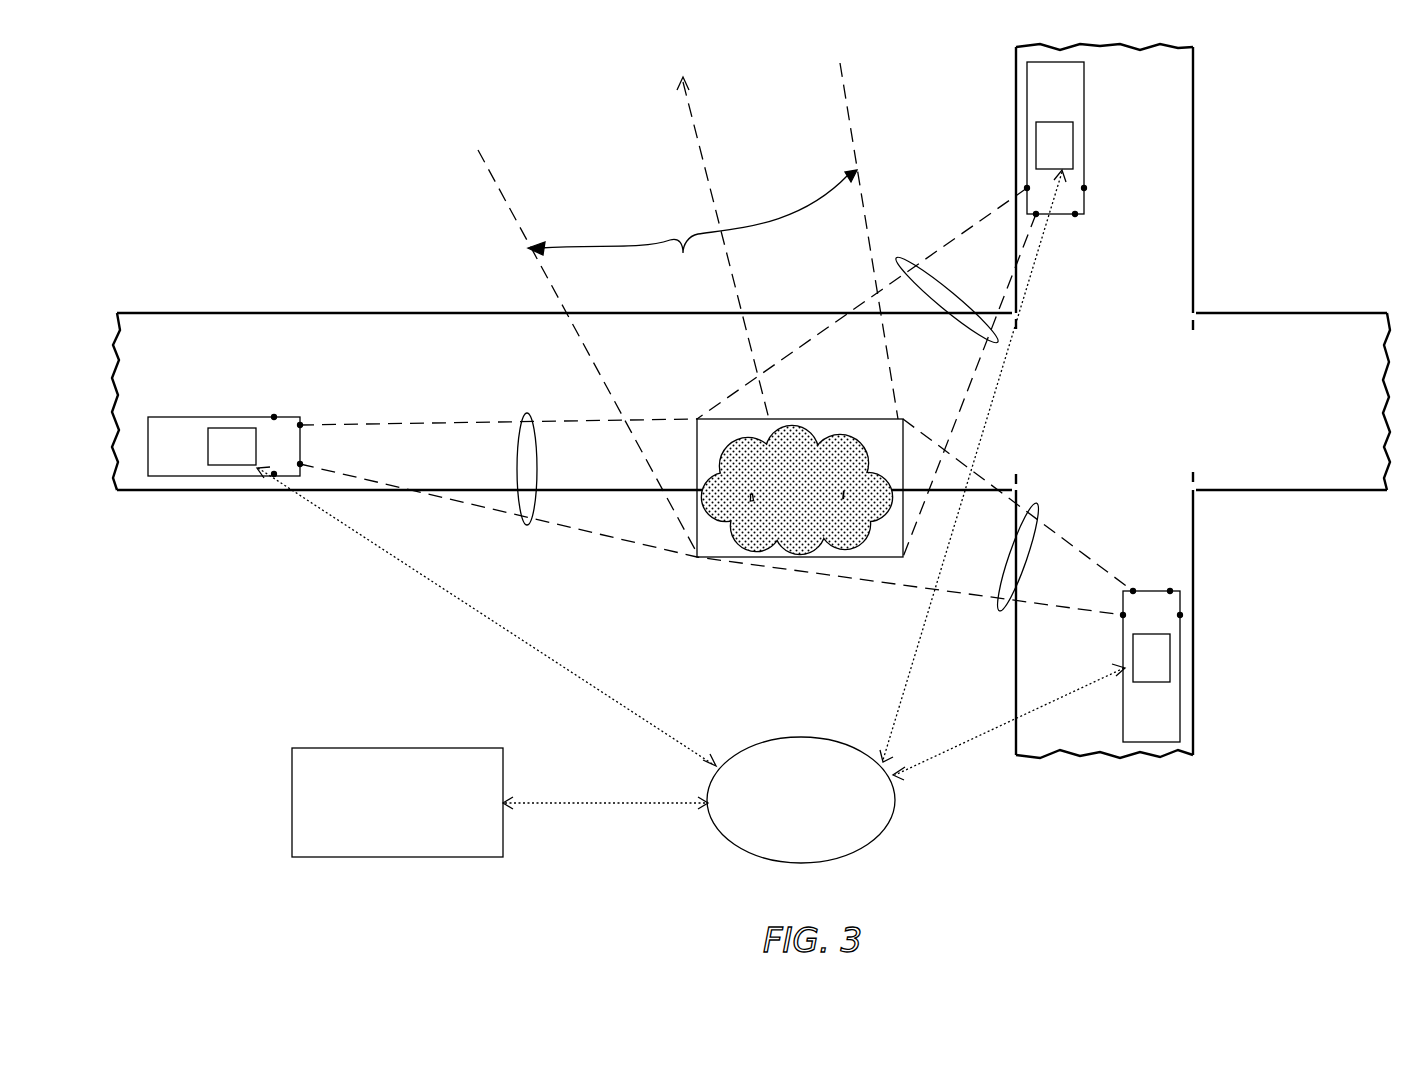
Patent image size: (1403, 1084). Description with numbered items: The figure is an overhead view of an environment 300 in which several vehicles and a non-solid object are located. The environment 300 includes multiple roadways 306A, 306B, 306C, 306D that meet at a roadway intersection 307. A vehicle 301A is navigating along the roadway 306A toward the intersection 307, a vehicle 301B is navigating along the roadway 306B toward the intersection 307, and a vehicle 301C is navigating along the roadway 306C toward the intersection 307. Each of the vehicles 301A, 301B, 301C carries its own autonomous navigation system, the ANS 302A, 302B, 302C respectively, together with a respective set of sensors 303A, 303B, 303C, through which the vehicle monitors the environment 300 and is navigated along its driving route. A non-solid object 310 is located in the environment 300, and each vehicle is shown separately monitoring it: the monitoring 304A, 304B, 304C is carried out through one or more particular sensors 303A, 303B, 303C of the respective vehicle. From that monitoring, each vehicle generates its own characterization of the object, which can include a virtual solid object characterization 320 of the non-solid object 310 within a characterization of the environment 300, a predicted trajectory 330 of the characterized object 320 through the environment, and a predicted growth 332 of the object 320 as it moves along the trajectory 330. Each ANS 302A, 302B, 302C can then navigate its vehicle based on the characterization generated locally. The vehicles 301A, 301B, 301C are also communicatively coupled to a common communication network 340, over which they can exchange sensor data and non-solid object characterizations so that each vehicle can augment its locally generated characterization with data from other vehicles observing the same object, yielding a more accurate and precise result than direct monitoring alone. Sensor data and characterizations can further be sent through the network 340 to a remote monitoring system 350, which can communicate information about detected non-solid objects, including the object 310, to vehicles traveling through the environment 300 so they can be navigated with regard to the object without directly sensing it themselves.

The environment 300 is at (331, 146).
The vehicle 301A is at (186, 458).
The vehicle 301B is at (1085, 164).
The vehicle 301C is at (1175, 713).
The ANS 302A is at (240, 456).
The ANS 302B is at (1072, 135).
The ANS 302C is at (1160, 663).
The set of sensors 303A is at (275, 415).
The set of sensors 303B is at (1085, 214).
The set of sensors 303C is at (1182, 615).
The monitoring 304A is at (527, 527).
The monitoring 304B is at (898, 258).
The monitoring 304C is at (1002, 612).
The roadway 306A is at (197, 363).
The roadway 306B is at (1170, 106).
The roadway 306C is at (1176, 523).
The roadway 306D is at (1341, 468).
The roadway intersection 307 is at (1120, 408).
The non-solid object 310 is at (805, 518).
The virtual solid object characterization 320 is at (889, 443).
The predicted trajectory 330 is at (700, 148).
The predicted growth 332 is at (692, 227).
The communication network 340 is at (783, 825).
The remote monitoring system 350 is at (381, 841).